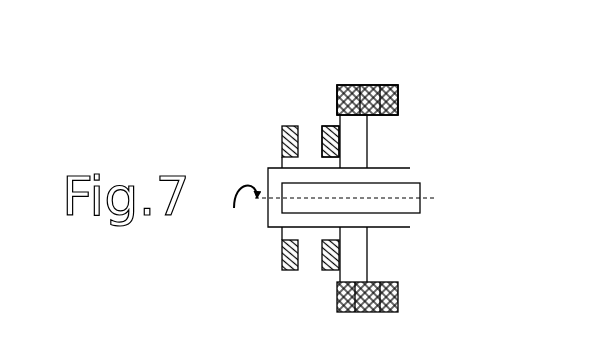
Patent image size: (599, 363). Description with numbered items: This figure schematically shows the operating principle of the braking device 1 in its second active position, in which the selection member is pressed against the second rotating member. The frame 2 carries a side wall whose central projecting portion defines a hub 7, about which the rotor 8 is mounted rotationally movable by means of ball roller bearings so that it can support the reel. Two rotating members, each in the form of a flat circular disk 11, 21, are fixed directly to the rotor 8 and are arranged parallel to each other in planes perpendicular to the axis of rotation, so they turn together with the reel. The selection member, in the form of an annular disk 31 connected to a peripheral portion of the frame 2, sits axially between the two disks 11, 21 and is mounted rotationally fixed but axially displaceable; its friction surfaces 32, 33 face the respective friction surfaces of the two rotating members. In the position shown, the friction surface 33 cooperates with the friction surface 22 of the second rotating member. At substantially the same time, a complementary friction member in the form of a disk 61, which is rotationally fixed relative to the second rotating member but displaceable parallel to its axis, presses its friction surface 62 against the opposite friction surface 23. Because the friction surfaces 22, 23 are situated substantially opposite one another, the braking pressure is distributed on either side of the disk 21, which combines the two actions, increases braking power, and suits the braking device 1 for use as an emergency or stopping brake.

The braking device 1 is at (292, 314).
The frame 2 is at (282, 140).
The hub 7 is at (414, 182).
The rotor 8 is at (268, 218).
The disk 11 is at (282, 243).
The disk 21 is at (367, 252).
The friction surface 22 is at (363, 85).
The friction surface 23 is at (377, 87).
The disk 31 is at (327, 273).
The friction surface 32 is at (322, 128).
The friction surface 33 is at (337, 92).
The disk 61 is at (398, 302).
The friction surface 62 is at (398, 100).